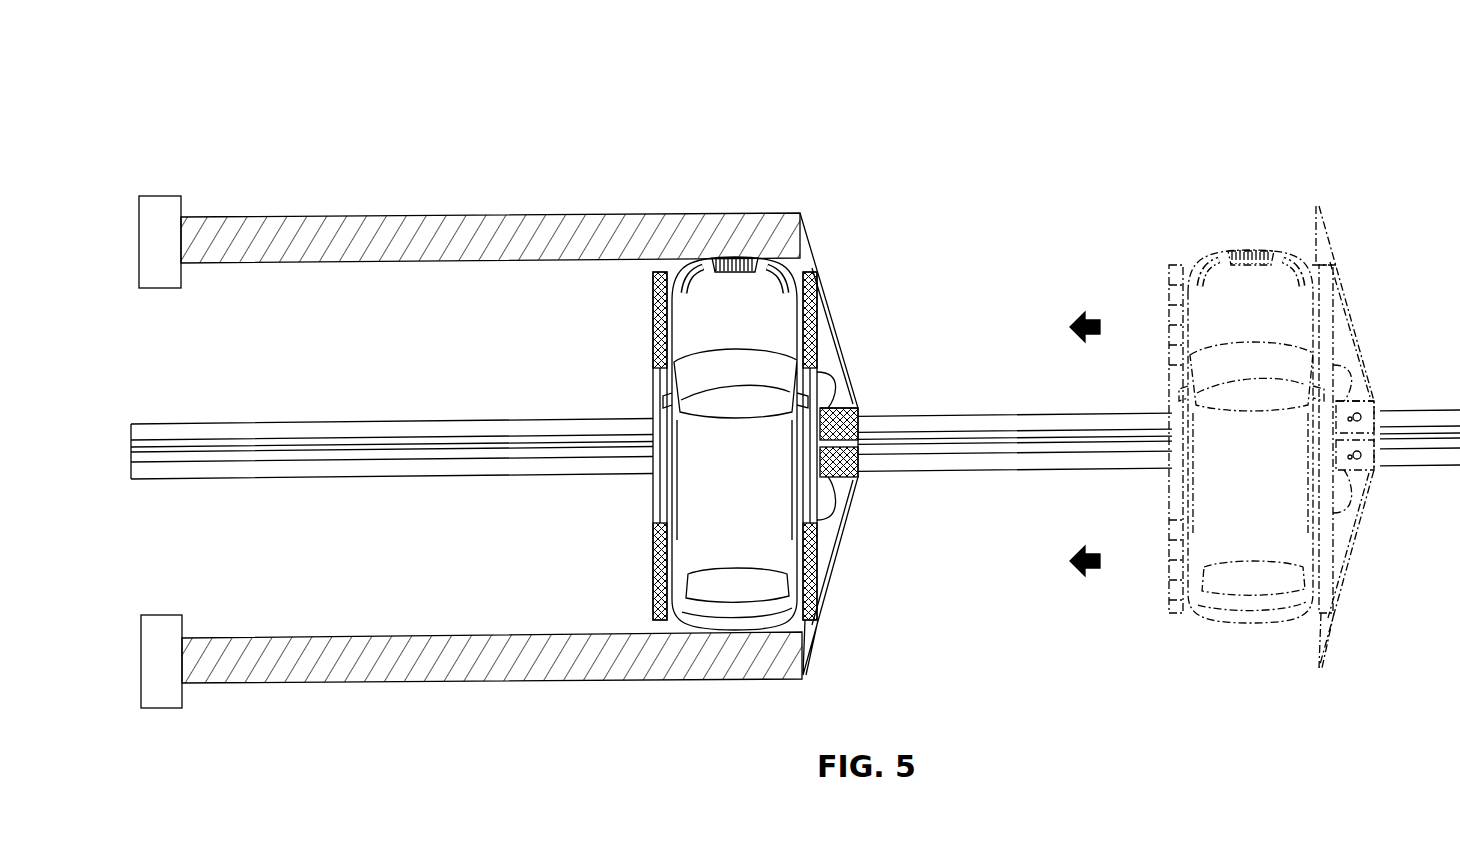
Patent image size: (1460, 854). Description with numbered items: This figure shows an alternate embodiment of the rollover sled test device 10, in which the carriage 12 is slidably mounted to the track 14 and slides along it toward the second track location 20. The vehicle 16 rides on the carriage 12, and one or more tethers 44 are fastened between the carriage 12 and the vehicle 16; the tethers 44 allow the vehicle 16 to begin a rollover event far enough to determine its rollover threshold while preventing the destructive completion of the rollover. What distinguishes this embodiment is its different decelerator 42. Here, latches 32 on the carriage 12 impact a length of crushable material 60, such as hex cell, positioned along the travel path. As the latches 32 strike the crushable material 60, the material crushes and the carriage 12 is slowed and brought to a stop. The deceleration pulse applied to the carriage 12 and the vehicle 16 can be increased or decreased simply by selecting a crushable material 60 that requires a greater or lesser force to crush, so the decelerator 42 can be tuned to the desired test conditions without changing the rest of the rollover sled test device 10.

The rollover sled test device 10 is at (1237, 122).
The carriage 12 is at (802, 443).
The track 14 is at (1022, 440).
The vehicle 16 is at (748, 504).
The second track location 20 is at (397, 452).
The latches 32 is at (813, 245).
The decelerator 42 is at (500, 445).
The tethers 44 is at (857, 398).
The length of crushable material 60 is at (430, 215).